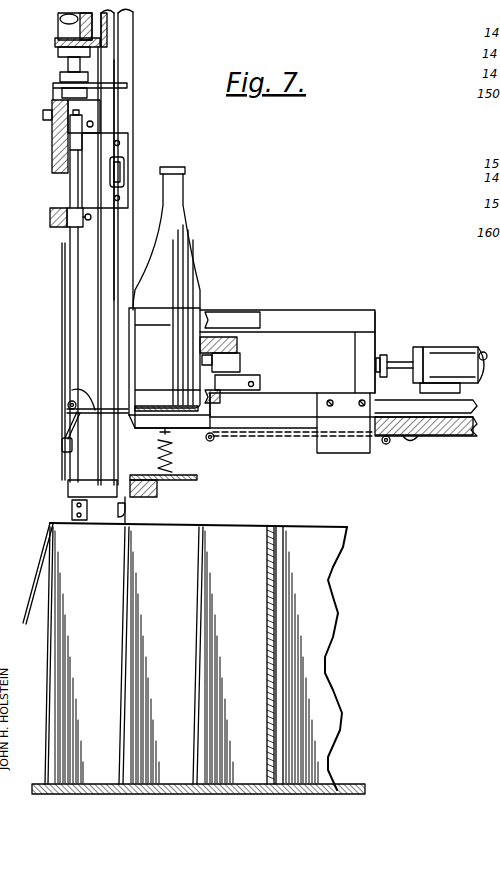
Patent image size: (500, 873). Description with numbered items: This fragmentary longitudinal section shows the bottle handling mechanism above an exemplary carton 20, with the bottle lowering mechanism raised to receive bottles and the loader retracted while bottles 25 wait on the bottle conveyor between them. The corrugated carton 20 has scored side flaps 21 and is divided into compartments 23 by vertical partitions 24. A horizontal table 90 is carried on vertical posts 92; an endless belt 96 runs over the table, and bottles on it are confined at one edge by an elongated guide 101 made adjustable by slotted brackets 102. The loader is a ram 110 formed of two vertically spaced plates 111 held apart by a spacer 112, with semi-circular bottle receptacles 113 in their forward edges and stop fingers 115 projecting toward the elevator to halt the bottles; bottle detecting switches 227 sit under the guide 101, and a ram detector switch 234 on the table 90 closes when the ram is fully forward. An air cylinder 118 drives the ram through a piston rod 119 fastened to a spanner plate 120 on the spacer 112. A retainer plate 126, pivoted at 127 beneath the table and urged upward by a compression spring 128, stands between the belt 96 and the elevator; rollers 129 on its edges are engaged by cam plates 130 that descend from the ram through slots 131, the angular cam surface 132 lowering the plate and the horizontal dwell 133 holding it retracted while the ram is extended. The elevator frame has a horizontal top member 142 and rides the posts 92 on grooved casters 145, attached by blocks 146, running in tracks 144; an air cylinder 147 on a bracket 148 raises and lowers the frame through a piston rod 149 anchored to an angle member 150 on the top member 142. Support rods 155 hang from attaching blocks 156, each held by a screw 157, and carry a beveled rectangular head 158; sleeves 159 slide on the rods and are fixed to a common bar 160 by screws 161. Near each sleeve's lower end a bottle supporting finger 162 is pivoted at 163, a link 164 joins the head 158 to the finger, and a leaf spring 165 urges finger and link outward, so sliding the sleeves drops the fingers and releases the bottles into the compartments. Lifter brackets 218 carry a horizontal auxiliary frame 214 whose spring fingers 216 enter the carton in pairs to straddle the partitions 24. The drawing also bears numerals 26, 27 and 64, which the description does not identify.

The vertical posts 92 is at (130, 33).
The track 144 is at (119, 63).
The air cylinder 147 is at (63, 28).
The bracket 148 is at (58, 43).
The piston rod 149 is at (67, 65).
The angle member 150 is at (50, 89).
The horizontal top member 142 is at (60, 158).
The attaching blocks 156 is at (73, 133).
The screw 157 is at (93, 123).
The block 146 is at (128, 145).
The grooved casters 145 is at (121, 167).
The support rods 155 is at (72, 183).
The common bar 160 is at (50, 217).
The screw 161 is at (67, 222).
The sleeves 159 is at (70, 292).
The bottle cap 27 is at (178, 195).
The bottles 25 is at (205, 252).
The bottle body 26 is at (155, 346).
The stop fingers 115 is at (133, 318).
The endless belt 96 is at (150, 406).
The ram 110 is at (326, 313).
The bottle receptacles 113 is at (253, 316).
The elongated guide 101 is at (224, 337).
The bracket 102 is at (240, 342).
The bottle detecting switches 227 is at (250, 357).
The ram detector switch 234 is at (254, 383).
The plates 111 is at (312, 326).
The spacer 112 is at (362, 384).
The slots 131 is at (308, 414).
The horizontal dwell 133 is at (293, 454).
The cam plate 130 is at (347, 444).
The angular cam surface 132 is at (236, 447).
The rollers 129 is at (213, 441).
The compression spring 128 is at (170, 461).
The table 90 is at (462, 437).
The pivot 127 is at (388, 445).
The air cylinder 118 is at (460, 352).
The piston rod 119 is at (397, 360).
The spanner plate 120 is at (385, 338).
The bottle supporting finger 162 is at (75, 390).
The pivot 163 is at (68, 403).
The leaf springs 165 is at (100, 410).
The link 164 is at (73, 426).
The rectangular head 158 is at (62, 441).
The retainer plate 126 is at (127, 423).
The lifter brackets 218 is at (72, 510).
The horizontal auxiliary frame 214 is at (157, 493).
The spring fingers 216 is at (127, 513).
The carton 20 is at (252, 653).
The base plate 64 is at (353, 790).
The side flaps 21 is at (25, 625).
The compartments 23 is at (143, 655).
The partitions 24 is at (195, 652).